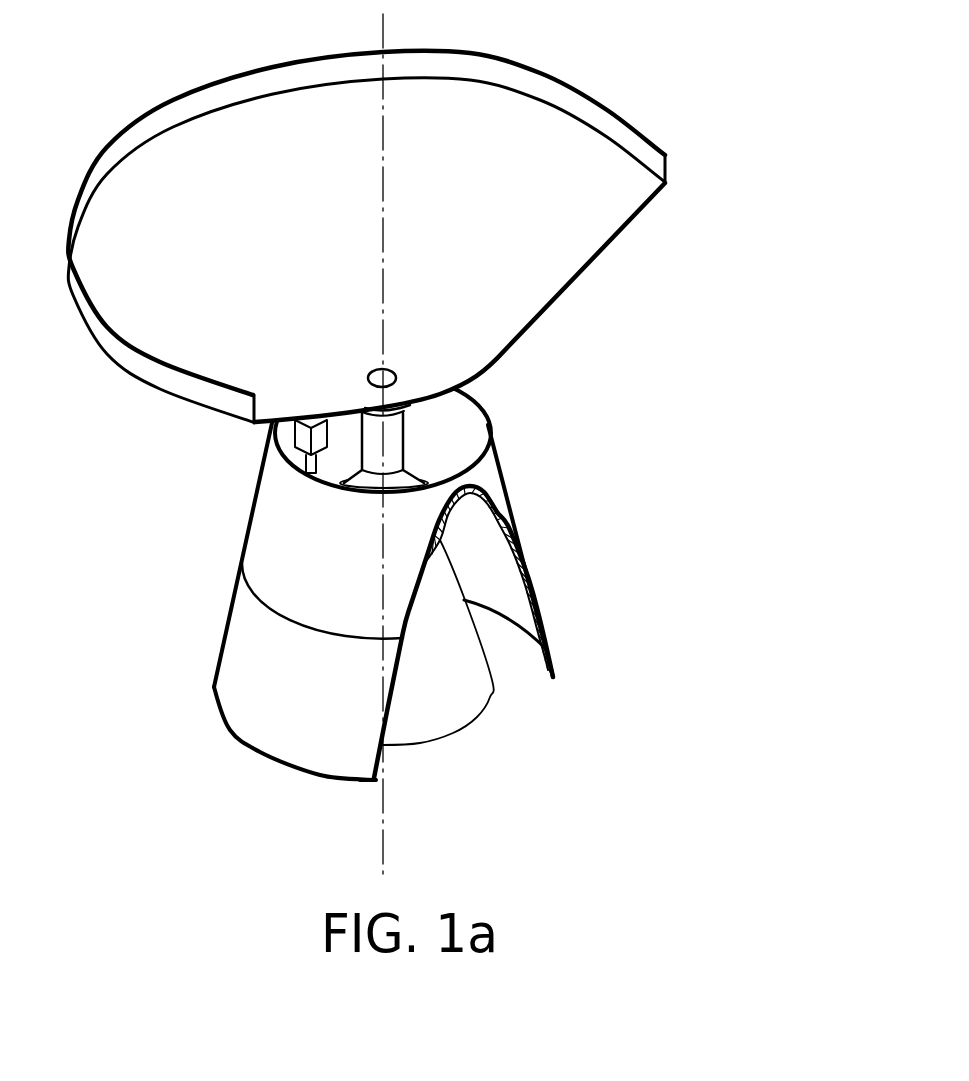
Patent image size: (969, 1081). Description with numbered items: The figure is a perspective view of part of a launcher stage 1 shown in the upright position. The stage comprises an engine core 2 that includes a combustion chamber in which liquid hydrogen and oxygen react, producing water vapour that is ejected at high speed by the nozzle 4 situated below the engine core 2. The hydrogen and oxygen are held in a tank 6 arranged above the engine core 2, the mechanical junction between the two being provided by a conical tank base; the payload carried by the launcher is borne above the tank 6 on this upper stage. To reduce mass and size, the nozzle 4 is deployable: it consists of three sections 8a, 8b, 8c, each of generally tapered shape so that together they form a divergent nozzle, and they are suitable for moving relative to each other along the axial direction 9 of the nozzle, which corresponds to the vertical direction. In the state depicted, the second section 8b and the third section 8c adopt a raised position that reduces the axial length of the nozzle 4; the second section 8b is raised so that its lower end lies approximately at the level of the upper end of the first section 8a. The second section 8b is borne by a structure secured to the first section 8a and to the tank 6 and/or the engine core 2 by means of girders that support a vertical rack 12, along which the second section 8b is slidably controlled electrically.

The launcher stage 1 is at (99, 104).
The engine core 2 is at (403, 438).
The nozzle 4 is at (526, 528).
The tank 6 is at (575, 105).
The first section 8a is at (472, 650).
The second section 8b is at (493, 473).
The third section 8c is at (238, 657).
The axial direction 9 is at (385, 857).
The vertical rack 12 is at (306, 461).